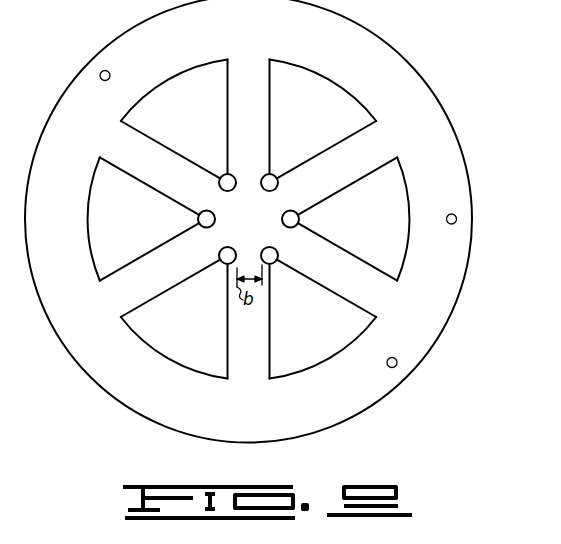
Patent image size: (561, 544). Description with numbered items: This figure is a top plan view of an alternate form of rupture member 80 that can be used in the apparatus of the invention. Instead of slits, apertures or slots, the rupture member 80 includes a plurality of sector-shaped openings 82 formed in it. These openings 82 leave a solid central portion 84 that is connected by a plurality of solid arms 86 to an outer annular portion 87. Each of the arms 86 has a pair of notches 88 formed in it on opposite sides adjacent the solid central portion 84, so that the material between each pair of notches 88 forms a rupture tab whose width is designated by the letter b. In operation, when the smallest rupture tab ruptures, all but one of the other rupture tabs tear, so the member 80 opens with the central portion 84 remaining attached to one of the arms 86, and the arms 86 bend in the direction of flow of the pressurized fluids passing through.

The rupture member 80 is at (428, 117).
The sector-shaped openings 82 is at (310, 68).
The solid central portion 84 is at (263, 228).
The solid arms 86 is at (252, 123).
The annular portion 87 is at (440, 307).
The notches 88 is at (198, 219).